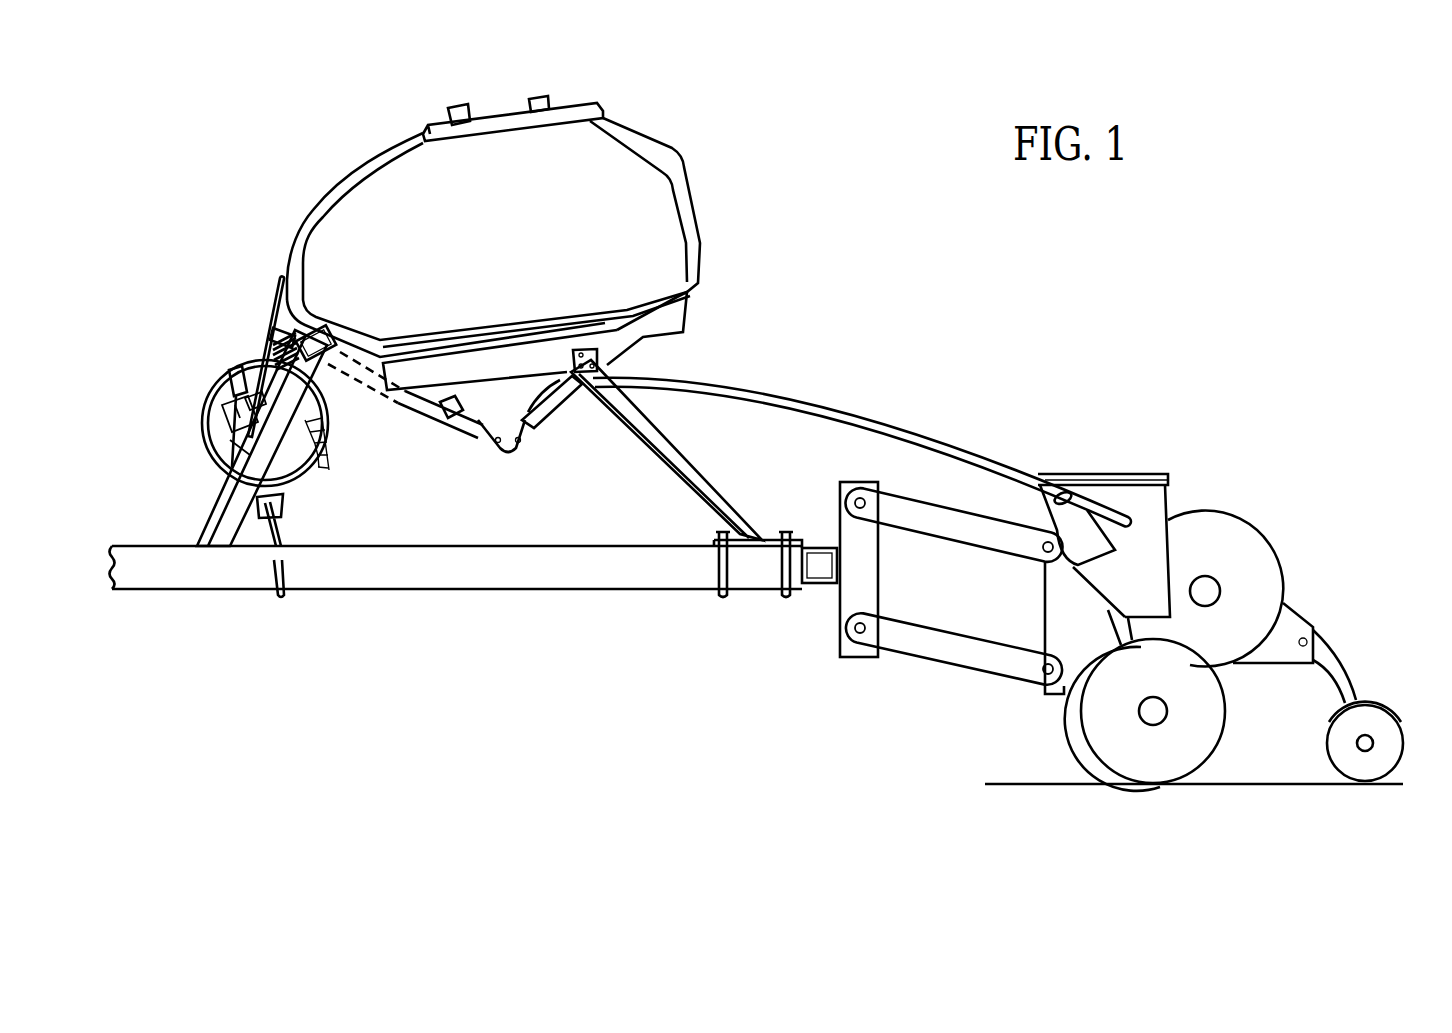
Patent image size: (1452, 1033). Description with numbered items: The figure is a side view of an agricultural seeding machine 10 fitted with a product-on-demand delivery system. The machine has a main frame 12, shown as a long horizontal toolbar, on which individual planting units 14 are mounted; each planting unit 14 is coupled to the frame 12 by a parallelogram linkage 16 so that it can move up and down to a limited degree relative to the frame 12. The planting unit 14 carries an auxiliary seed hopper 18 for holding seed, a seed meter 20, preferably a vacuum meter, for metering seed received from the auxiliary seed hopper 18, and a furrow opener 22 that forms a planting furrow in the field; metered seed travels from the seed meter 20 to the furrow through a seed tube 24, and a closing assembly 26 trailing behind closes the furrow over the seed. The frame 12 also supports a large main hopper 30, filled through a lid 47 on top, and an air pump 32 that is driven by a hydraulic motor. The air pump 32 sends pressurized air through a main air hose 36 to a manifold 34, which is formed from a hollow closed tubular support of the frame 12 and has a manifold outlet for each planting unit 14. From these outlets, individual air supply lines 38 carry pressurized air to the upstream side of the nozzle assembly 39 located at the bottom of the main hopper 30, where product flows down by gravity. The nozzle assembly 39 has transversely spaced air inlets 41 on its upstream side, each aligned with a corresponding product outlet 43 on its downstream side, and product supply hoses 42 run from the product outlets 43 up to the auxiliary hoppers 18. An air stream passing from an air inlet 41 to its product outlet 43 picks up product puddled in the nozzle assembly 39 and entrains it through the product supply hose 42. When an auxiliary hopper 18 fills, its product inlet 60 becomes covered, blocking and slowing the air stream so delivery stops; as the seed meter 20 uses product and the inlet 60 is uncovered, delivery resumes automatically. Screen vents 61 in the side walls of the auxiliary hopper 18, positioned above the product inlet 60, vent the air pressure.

The agricultural seeding machine 10 is at (847, 212).
The frame 12 is at (500, 591).
The planting unit 14 is at (1205, 438).
The parallelogram linkage 16 is at (928, 680).
The auxiliary seed hopper 18 is at (1147, 592).
The seed meter 20 is at (1246, 571).
The furrow opener 22 is at (1072, 774).
The seed tube 24 is at (1110, 620).
The closing assembly 26 is at (1370, 708).
The main hopper 30 is at (505, 250).
The air pump 32 is at (208, 464).
The manifold 34 is at (282, 312).
The main air hose 36 is at (272, 348).
The air supply line 38 is at (341, 368).
The nozzle assembly 39 is at (486, 463).
The air inlet 41 is at (484, 436).
The product supply hose 42 is at (756, 393).
The product outlet 43 is at (536, 430).
The hopper lid 47 is at (503, 104).
The auxiliary hopper product inlet 60 is at (1167, 503).
The screen vent 61 is at (1055, 497).